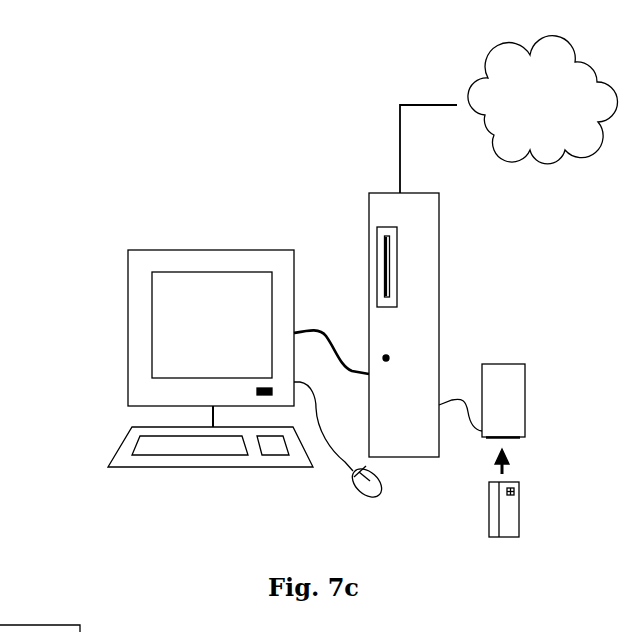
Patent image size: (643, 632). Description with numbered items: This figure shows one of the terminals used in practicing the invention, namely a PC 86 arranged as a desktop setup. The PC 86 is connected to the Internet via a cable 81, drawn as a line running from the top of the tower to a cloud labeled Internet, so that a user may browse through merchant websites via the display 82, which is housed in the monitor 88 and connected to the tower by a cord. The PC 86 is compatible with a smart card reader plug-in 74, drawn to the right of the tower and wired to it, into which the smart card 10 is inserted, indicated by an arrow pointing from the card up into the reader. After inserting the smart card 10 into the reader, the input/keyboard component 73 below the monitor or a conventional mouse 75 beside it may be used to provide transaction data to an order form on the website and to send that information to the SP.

The cable 81 is at (415, 103).
The display 82 is at (169, 299).
The monitor housing 88 is at (231, 247).
The PC 86 is at (439, 263).
The input/keyboard component 73 is at (178, 455).
The mouse 75 is at (356, 488).
The smart card reader plug-in 74 is at (525, 394).
The smart card 10 is at (519, 511).